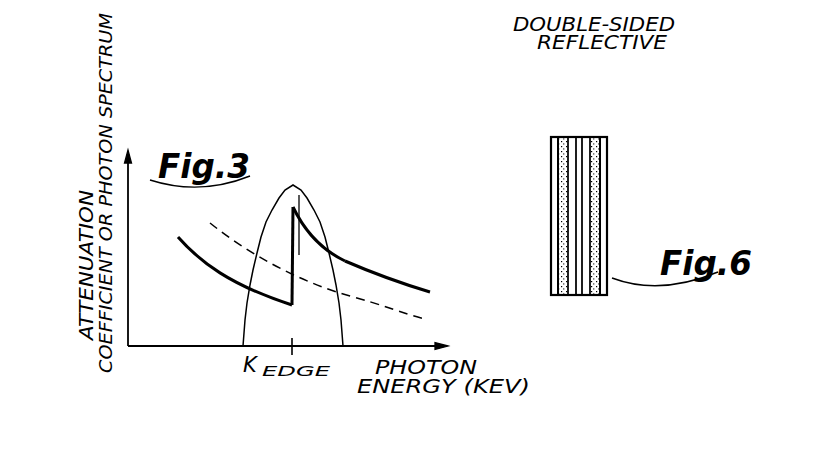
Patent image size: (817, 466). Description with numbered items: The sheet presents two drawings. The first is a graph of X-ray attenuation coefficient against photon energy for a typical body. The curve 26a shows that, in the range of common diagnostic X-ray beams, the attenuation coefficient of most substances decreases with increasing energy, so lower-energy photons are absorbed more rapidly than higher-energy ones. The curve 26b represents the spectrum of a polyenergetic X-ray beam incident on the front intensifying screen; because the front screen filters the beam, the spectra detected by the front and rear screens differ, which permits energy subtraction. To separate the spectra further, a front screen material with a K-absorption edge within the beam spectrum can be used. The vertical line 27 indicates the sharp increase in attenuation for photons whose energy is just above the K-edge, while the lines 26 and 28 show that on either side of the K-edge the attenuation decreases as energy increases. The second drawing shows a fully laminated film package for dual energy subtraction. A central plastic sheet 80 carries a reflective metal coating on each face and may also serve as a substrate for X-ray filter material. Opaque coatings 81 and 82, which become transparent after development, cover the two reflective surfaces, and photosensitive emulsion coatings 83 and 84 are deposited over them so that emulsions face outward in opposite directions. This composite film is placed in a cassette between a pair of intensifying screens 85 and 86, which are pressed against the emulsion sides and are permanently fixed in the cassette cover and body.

In FIG. 3, the attenuation line below K-edge 26 is at (204, 267).
In FIG. 3, the attenuation energy-dependence curve 26a is at (407, 318).
In FIG. 3, the X-ray beam spectrum curve 26b is at (318, 222).
In FIG. 3, the K-edge vertical line 27 is at (292, 227).
In FIG. 3, the attenuation line above K-edge 28 is at (372, 277).
In FIG. 6, the plastic sheet 80 is at (579, 137).
In FIG. 6, the opaque coating 81 is at (564, 137).
In FIG. 6, the opaque coating 82 is at (594, 137).
In FIG. 6, the photosensitive emulsion coating 83 is at (572, 137).
In FIG. 6, the photosensitive emulsion coating 84 is at (586, 137).
In FIG. 6, the intensifying screen 85 is at (551, 158).
In FIG. 6, the intensifying screen 86 is at (607, 158).